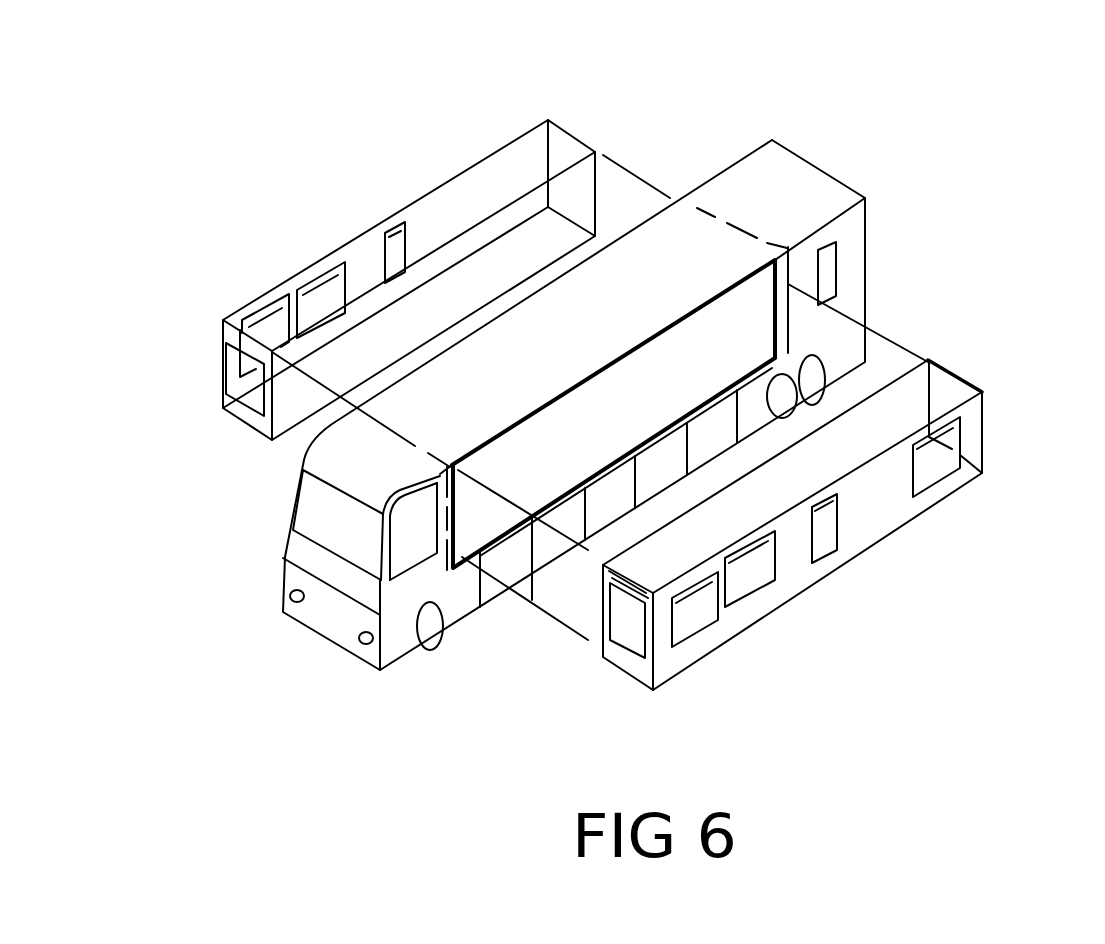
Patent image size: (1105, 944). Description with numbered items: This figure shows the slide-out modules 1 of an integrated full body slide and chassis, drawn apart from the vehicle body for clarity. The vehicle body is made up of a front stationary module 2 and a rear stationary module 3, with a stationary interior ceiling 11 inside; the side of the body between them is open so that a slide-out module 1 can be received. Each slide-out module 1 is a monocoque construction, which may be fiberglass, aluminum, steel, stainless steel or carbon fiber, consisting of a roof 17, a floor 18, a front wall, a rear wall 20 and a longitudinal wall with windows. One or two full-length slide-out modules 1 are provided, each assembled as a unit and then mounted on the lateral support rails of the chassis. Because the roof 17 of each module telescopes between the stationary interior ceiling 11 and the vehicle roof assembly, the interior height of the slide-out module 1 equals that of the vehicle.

The slide-out module 1 is at (594, 396).
The front stationary module 2 is at (347, 447).
The rear stationary module 3 is at (555, 362).
The interior ceiling 11 is at (680, 222).
The roof 17 is at (443, 205).
The floor 18 is at (672, 662).
The rear wall 20 is at (977, 422).